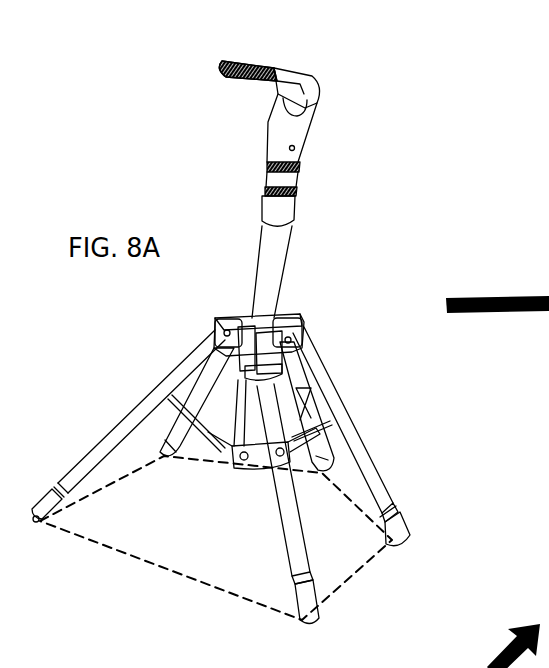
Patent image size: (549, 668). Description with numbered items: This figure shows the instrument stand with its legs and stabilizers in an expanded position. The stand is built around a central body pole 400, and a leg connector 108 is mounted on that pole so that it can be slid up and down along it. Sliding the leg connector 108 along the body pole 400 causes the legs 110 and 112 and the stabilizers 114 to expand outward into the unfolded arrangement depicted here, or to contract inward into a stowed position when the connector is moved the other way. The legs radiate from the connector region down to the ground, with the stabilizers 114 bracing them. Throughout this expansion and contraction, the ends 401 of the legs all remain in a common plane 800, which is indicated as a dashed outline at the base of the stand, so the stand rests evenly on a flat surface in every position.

The body pole 400 is at (268, 243).
The leg connector 108 is at (301, 336).
The leg 110 is at (106, 436).
The stabilizer 114 is at (196, 398).
The leg 112 is at (305, 416).
The common plane 800 is at (380, 560).
The end 401 is at (37, 523).